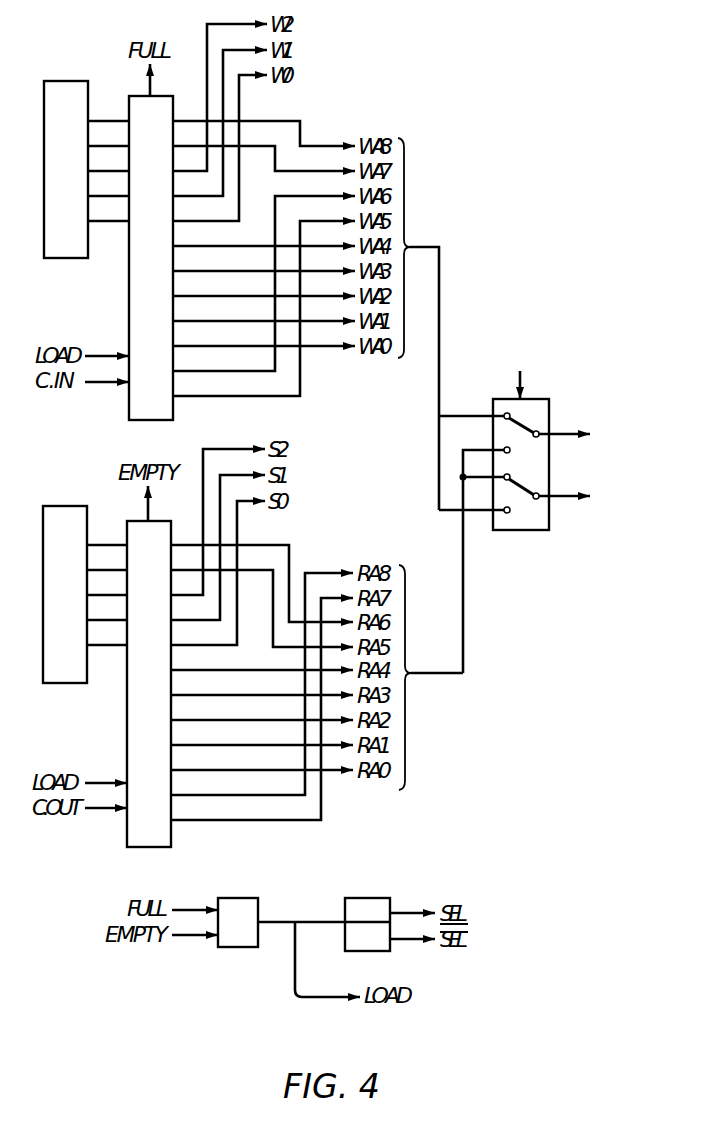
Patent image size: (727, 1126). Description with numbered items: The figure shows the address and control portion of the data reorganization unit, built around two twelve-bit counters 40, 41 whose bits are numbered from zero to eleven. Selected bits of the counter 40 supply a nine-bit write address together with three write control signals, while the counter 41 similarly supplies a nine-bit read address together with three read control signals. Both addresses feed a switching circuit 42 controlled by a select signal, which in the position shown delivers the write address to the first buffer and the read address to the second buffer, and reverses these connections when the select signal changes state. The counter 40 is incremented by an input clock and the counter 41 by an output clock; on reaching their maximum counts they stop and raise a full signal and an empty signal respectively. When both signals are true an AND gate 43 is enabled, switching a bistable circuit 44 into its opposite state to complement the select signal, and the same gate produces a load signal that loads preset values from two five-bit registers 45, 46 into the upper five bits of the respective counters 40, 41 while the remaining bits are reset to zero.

The counter 40 is at (129, 300).
The counter 41 is at (127, 729).
The switching circuit 42 is at (520, 531).
The AND gate 43 is at (250, 948).
The bistable circuit 44 is at (368, 952).
The five-bit register 45 is at (44, 222).
The five-bit register 46 is at (43, 645).